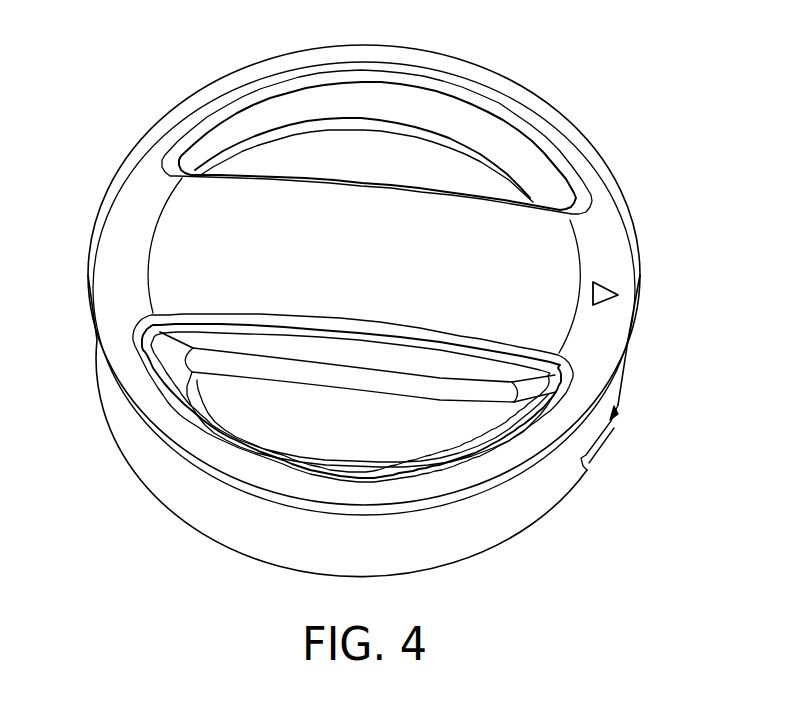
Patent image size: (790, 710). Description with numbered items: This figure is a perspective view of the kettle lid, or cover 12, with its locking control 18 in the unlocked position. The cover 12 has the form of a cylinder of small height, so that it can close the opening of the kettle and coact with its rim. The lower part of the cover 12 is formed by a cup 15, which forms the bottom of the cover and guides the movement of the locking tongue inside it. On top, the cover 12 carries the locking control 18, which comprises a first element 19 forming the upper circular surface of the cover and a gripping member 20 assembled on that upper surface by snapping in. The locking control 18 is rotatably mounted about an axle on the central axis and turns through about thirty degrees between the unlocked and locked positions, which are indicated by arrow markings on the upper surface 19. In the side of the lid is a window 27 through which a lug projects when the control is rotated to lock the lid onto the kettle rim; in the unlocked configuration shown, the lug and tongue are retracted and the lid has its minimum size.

The cover 12 is at (612, 165).
The cup 15 is at (532, 492).
The locking control 18 is at (472, 153).
The first element 19 is at (241, 100).
The gripping member 20 is at (193, 247).
The window 27 is at (605, 435).